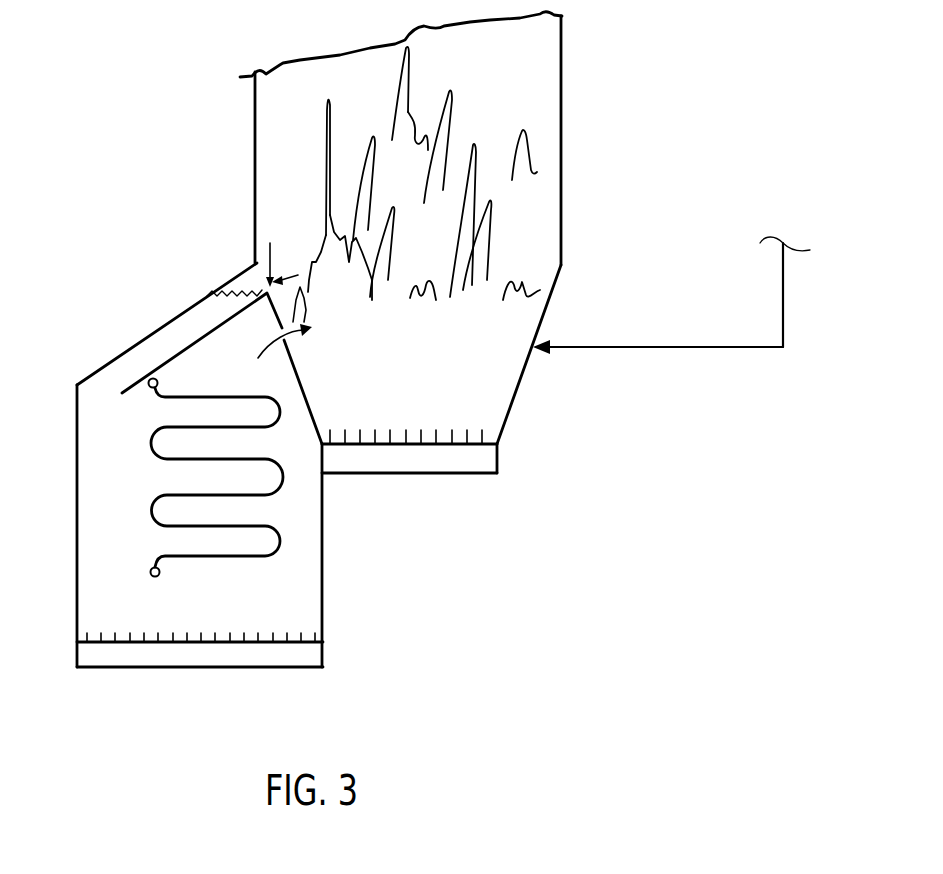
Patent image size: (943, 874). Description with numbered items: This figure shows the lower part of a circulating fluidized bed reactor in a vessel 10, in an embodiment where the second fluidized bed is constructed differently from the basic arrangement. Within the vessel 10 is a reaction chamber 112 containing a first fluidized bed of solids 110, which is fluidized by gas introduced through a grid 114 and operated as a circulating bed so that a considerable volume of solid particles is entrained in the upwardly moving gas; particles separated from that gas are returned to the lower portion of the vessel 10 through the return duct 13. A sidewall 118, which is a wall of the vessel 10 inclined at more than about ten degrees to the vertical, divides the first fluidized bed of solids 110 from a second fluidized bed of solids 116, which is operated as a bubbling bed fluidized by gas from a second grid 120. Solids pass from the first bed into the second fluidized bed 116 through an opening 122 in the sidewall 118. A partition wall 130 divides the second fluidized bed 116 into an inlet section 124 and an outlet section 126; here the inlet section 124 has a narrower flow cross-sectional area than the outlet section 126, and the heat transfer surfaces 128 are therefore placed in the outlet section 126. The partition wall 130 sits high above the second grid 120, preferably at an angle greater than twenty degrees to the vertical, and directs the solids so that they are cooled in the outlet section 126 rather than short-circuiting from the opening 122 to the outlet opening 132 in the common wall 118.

The vessel 10 is at (562, 135).
The reaction chamber 112 is at (350, 118).
The first fluidized bed of solids 110 is at (489, 337).
The sidewall 118 is at (313, 412).
The grid 114 is at (478, 458).
The return duct 13 is at (783, 300).
The opening 122 is at (263, 282).
The inlet section 124 is at (110, 378).
The partition wall 130 is at (147, 372).
The heat transfer surfaces 128 is at (217, 397).
The second fluidized bed of solids 116 is at (160, 470).
The outlet section 126 is at (300, 530).
The second grid 120 is at (170, 653).
The outlet opening 132 is at (290, 344).